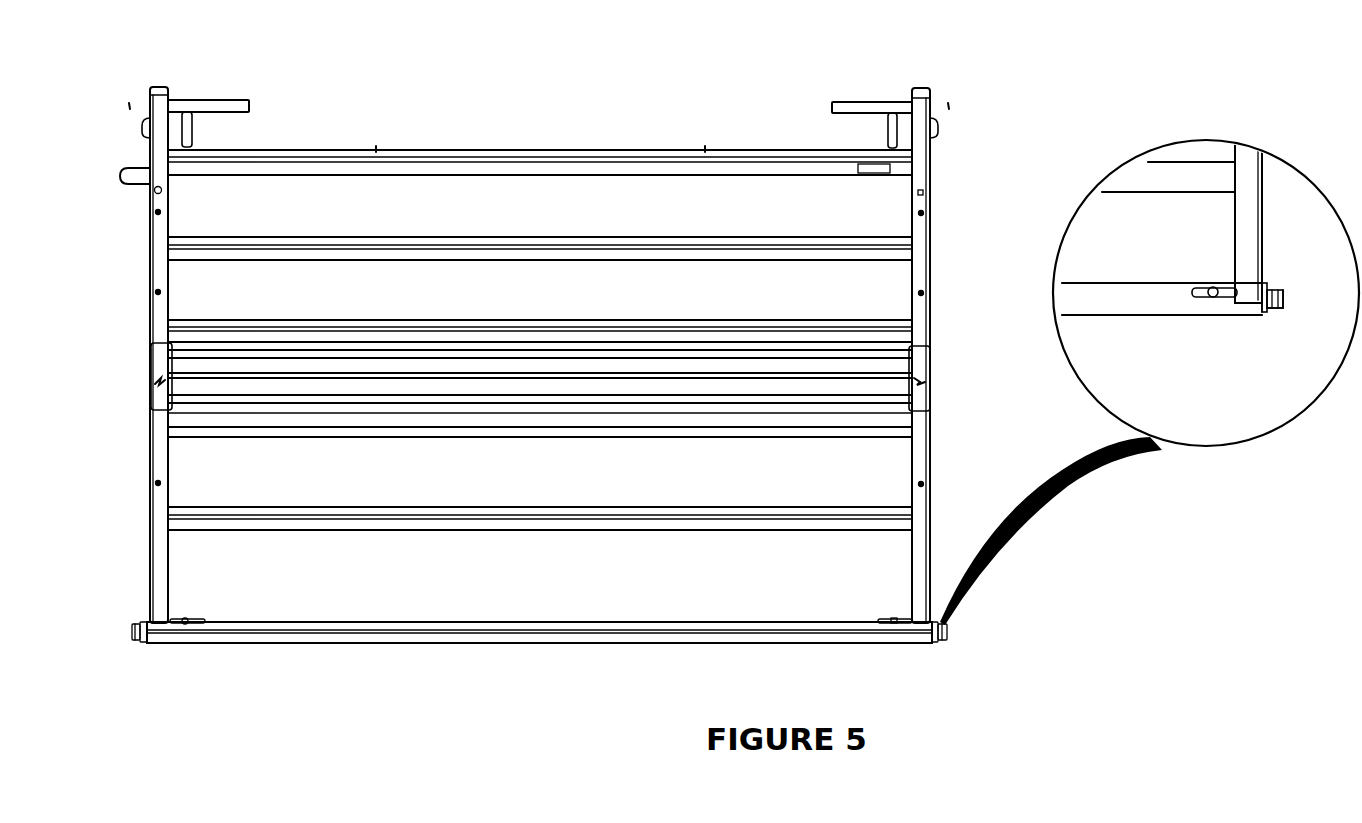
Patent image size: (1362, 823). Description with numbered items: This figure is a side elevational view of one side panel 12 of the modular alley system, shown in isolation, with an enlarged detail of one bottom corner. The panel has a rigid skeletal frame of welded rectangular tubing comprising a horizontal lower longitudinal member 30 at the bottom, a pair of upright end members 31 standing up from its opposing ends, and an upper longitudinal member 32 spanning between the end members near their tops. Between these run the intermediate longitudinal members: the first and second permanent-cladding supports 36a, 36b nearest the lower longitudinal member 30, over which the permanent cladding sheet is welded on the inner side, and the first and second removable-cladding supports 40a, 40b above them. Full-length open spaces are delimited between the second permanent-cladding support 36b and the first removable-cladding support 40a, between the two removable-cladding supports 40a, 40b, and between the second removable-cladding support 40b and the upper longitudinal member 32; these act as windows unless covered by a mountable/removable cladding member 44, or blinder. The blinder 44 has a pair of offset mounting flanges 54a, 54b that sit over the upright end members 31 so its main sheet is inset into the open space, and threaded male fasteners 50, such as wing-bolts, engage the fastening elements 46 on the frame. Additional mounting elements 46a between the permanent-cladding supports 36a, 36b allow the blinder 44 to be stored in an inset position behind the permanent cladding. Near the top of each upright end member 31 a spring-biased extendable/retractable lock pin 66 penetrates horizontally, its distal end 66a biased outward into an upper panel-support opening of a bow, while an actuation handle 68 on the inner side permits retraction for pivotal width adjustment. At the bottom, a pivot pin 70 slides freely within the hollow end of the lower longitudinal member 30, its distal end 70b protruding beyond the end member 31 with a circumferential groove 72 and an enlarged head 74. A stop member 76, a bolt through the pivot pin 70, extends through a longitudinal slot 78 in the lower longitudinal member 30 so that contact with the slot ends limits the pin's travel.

The side panel 12 is at (713, 134).
The lower longitudinal member 30 is at (526, 642).
The upright end member 31 is at (156, 557).
The upper longitudinal member 32 is at (547, 162).
The first permanent-cladding support 36a is at (564, 527).
The second permanent-cladding support 36b is at (647, 432).
The first removable-cladding support 40a is at (613, 330).
The second removable-cladding support 40b is at (606, 250).
The mountable/removable cladding member 44 is at (870, 377).
The fastening element 46 is at (157, 213).
The additional mounting element 46a is at (157, 485).
The threaded male fastener 50 is at (153, 380).
The mounting flange 54a is at (164, 403).
The mounting flange 54b is at (920, 406).
The extendable/retractable lock pin 66 is at (207, 103).
The distal end of lock pin 66a is at (148, 102).
The actuation handle 68 is at (193, 130).
The pivot pin 70 is at (126, 648).
The distal end of pivot pin 70b is at (1285, 300).
The circumferential groove 72 is at (1277, 284).
The enlarged head 74 is at (1274, 313).
The stop member 76 is at (187, 617).
The longitudinal slot 78 is at (209, 620).